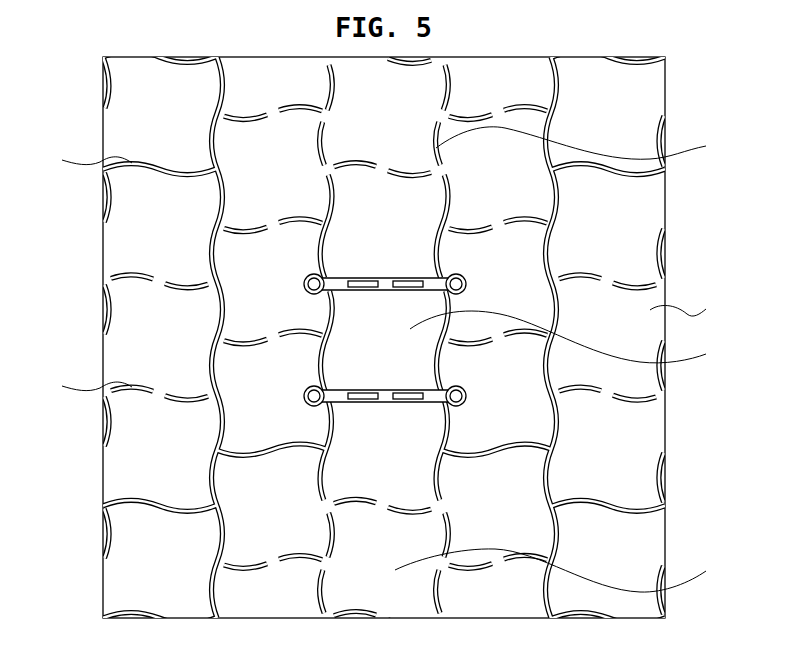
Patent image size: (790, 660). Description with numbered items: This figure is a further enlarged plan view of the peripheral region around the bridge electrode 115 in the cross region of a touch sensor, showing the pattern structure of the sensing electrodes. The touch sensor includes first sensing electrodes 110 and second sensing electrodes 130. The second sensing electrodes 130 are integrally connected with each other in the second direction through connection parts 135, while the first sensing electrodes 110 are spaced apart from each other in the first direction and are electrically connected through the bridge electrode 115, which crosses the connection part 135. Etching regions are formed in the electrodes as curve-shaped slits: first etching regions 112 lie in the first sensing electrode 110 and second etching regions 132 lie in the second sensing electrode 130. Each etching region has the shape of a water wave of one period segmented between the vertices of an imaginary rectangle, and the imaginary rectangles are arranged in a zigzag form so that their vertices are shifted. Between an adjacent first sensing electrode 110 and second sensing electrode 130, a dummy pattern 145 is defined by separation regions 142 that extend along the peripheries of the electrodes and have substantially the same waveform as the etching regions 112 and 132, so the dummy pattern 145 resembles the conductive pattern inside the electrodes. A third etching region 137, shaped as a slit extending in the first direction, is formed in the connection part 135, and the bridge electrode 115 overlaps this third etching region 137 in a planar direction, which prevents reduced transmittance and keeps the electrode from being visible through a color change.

The first sensing electrode 110 is at (650, 310).
The first etching region 112 is at (132, 387).
The bridge electrode 115 is at (413, 268).
The second sensing electrode 130 is at (395, 570).
The second etching region 132 is at (436, 148).
The connection part 135 is at (410, 329).
The third etching region 137 is at (410, 380).
The separation region 142 is at (132, 163).
The dummy pattern 145 is at (650, 88).